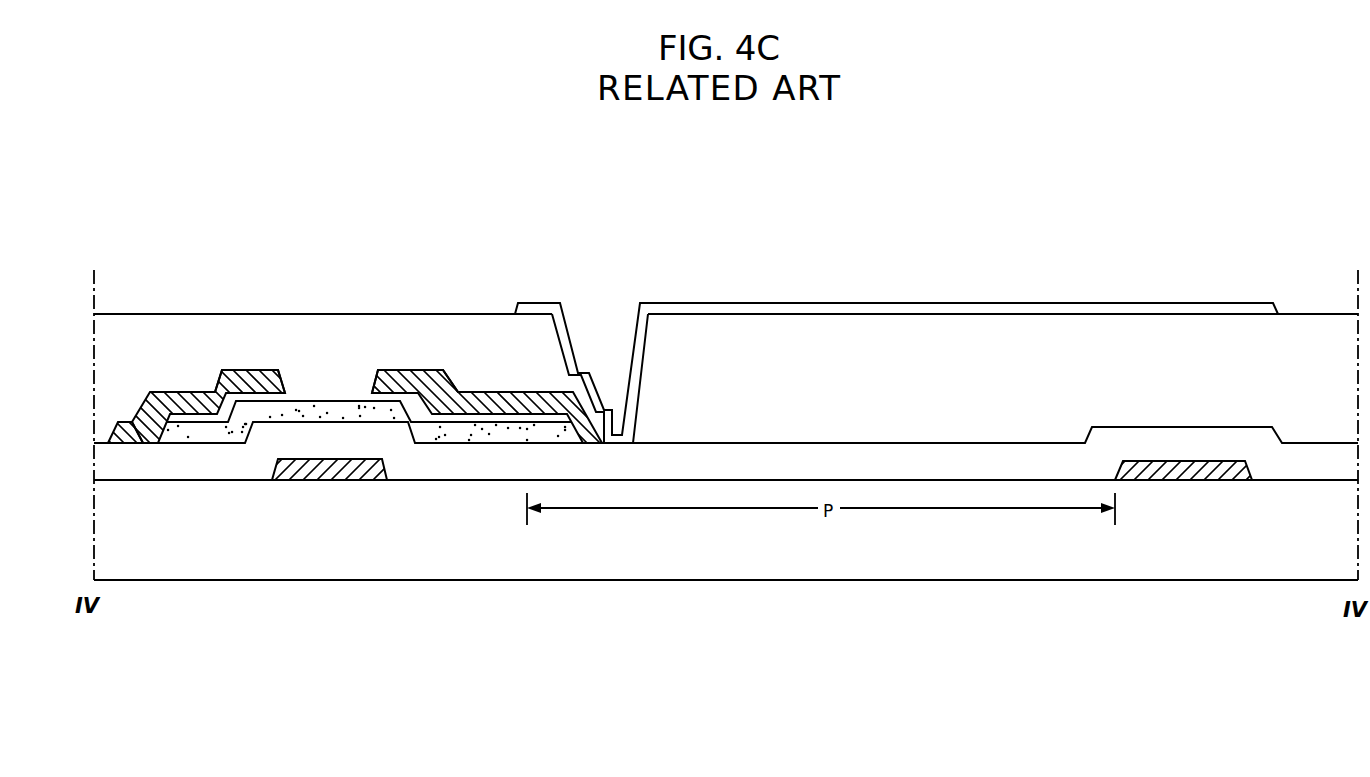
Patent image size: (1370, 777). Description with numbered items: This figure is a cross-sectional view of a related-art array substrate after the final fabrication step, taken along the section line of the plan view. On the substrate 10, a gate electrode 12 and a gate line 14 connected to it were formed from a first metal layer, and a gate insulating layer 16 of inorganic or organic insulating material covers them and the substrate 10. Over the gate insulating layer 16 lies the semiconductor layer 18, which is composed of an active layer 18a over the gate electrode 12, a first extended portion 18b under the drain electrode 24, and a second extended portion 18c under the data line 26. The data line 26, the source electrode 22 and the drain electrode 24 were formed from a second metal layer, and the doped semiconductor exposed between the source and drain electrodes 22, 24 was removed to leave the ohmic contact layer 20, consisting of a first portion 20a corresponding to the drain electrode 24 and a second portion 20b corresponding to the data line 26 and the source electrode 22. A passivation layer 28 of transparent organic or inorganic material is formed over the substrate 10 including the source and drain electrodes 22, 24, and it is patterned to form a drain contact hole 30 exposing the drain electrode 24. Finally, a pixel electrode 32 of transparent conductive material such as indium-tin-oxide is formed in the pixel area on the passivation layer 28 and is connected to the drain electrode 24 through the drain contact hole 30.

The substrate 10 is at (728, 560).
The gate electrode 12 is at (322, 468).
The gate line 14 is at (1213, 473).
The gate insulating layer 16 is at (898, 441).
The semiconductor layer 18 is at (458, 643).
The active layer 18a is at (327, 412).
The first extended portion 18b is at (466, 419).
The second extended portion 18c is at (185, 418).
The ohmic contact layer 20 is at (455, 242).
The first portion 20a is at (470, 402).
The second portion 20b is at (183, 400).
The source electrode 22 is at (262, 378).
The drain electrode 24 is at (407, 380).
The data line 26 is at (120, 432).
The passivation layer 28 is at (1008, 318).
The drain contact hole 30 is at (597, 308).
The pixel electrode 32 is at (790, 305).